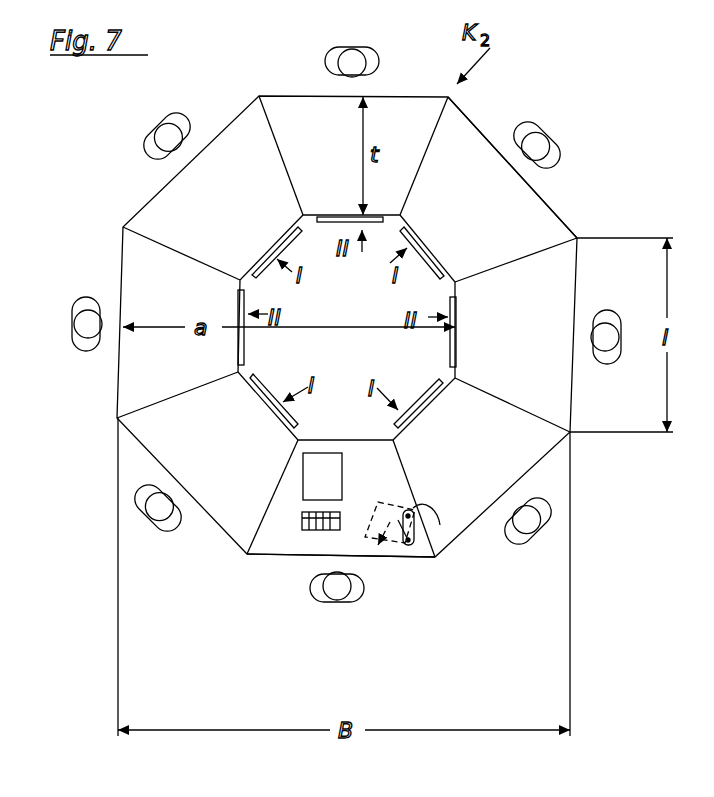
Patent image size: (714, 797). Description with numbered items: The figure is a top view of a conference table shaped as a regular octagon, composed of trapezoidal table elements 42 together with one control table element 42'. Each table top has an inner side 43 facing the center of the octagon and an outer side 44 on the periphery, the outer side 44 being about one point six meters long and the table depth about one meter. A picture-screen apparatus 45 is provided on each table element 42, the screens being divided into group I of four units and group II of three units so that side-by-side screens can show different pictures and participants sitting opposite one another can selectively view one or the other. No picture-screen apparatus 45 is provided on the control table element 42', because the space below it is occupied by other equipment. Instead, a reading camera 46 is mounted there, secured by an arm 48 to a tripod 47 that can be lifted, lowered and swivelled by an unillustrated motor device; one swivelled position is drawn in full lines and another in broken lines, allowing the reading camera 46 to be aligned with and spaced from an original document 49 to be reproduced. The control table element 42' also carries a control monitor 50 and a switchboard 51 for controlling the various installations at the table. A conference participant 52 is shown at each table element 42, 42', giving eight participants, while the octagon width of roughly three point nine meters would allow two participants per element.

The table element 42 is at (342, 292).
The table element 42' is at (332, 574).
The inner side 43 is at (427, 258).
The outer side 44 is at (485, 113).
The picture-screen apparatus 45 is at (270, 393).
The reading camera 46 is at (413, 508).
The tripod 47 is at (406, 547).
The arm 48 is at (416, 532).
The original document 49 is at (382, 545).
The control monitor 50 is at (313, 485).
The switchboard 51 is at (300, 528).
The conference participant 52 is at (352, 63).